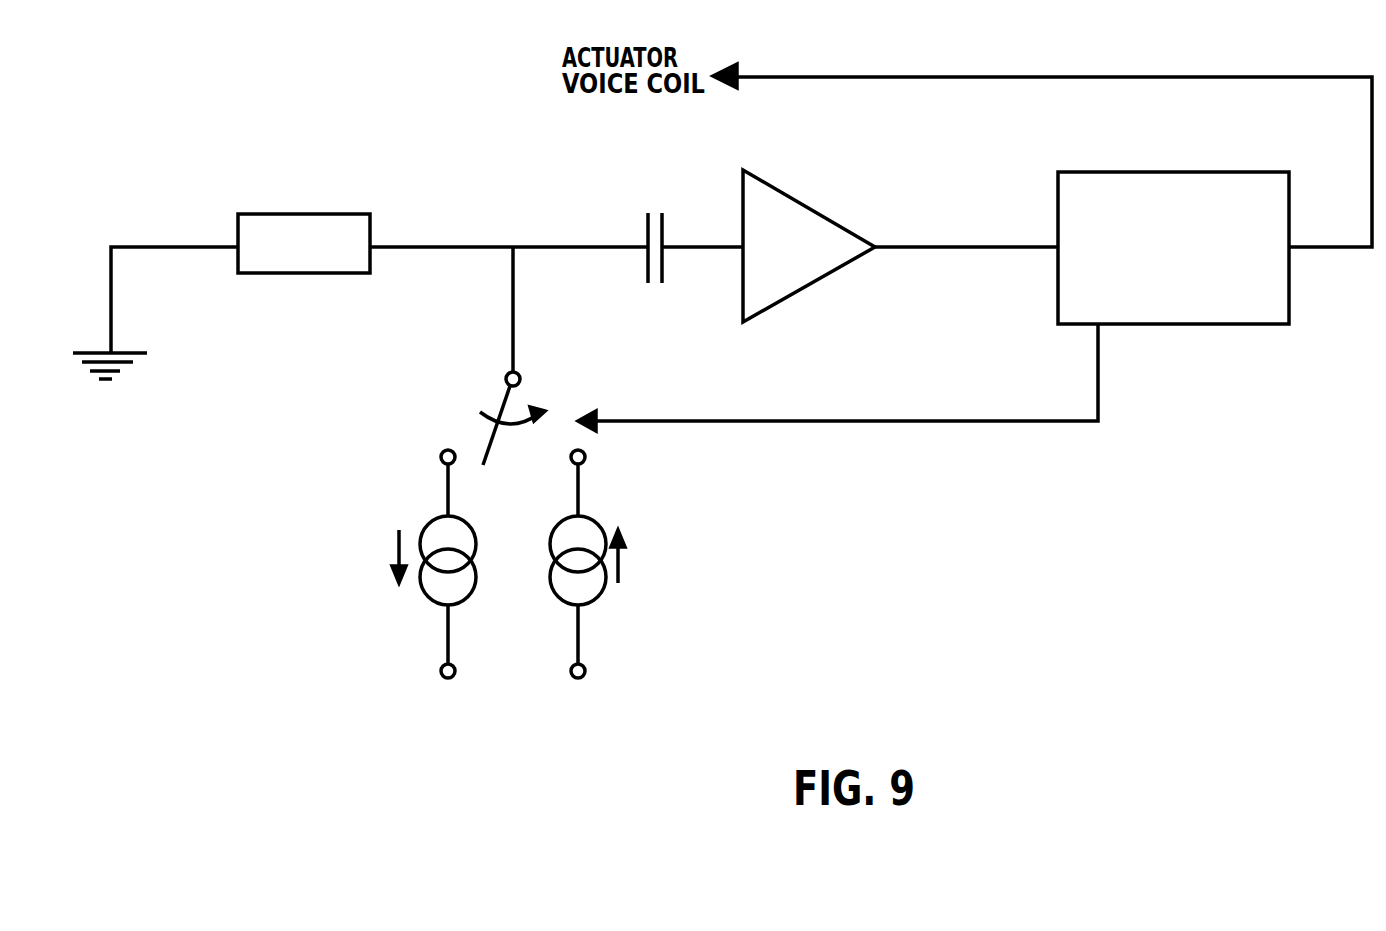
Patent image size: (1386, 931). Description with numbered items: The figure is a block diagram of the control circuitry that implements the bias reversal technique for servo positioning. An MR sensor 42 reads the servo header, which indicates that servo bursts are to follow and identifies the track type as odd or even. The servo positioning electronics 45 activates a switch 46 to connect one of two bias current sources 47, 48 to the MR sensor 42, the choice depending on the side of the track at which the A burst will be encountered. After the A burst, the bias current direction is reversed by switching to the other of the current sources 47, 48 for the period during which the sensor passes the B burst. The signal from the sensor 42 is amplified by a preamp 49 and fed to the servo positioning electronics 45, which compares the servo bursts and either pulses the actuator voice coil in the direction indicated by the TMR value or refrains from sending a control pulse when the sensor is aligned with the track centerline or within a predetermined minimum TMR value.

The MR sensor 42 is at (307, 273).
The servo positioning electronics 45 is at (1205, 325).
The switch 46 is at (566, 384).
The bias current source 47 is at (425, 600).
The bias current source 48 is at (588, 600).
The preamp 49 is at (813, 284).